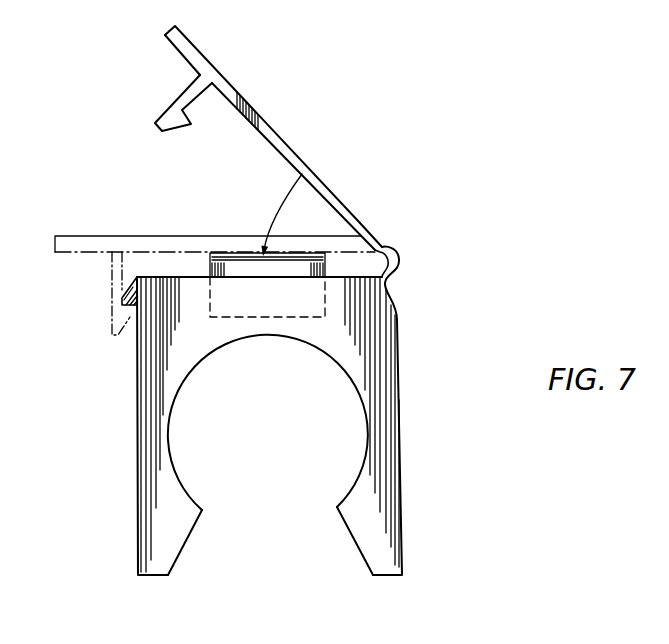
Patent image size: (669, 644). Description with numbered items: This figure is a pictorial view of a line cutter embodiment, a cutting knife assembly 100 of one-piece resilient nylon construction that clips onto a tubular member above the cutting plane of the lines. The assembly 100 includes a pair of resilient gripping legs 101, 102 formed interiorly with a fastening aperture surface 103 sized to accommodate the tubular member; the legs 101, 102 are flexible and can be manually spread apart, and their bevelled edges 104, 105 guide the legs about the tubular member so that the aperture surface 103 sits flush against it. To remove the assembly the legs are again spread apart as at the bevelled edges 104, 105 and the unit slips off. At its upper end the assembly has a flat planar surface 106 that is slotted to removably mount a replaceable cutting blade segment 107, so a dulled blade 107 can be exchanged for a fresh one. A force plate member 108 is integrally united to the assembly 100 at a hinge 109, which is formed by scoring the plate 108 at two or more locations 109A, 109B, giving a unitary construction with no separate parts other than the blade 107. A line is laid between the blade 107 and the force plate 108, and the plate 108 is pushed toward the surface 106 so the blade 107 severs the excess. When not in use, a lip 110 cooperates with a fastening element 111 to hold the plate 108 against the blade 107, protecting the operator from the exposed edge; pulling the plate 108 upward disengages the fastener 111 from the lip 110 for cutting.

The cutting knife assembly 100 is at (449, 163).
The gripping leg 101 is at (138, 518).
The gripping leg 102 is at (403, 483).
The fastening aperture surface 103 is at (171, 445).
The bevelled edge 104 is at (179, 558).
The bevelled edge 105 is at (362, 556).
The flat planar surface 106 is at (157, 277).
The replaceable cutting blade segment 107 is at (226, 253).
The force plate member 108 is at (287, 141).
The hinge 109 is at (403, 257).
The scoring location 109A is at (397, 293).
The scoring location 109B is at (389, 246).
The lip 110 is at (129, 306).
The fastening element 111 is at (190, 119).